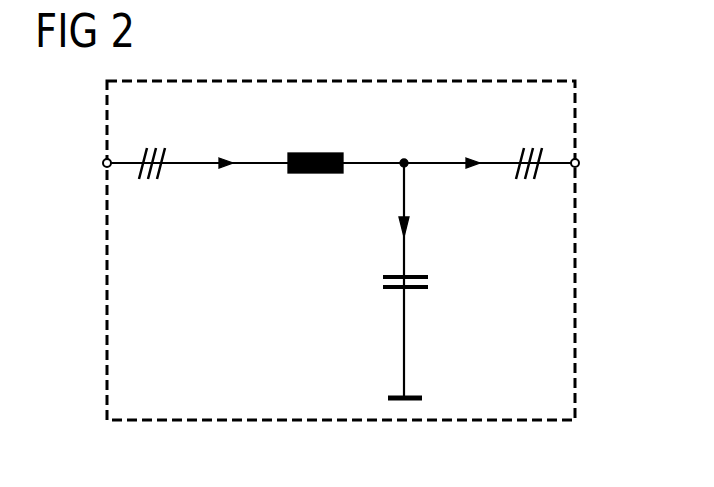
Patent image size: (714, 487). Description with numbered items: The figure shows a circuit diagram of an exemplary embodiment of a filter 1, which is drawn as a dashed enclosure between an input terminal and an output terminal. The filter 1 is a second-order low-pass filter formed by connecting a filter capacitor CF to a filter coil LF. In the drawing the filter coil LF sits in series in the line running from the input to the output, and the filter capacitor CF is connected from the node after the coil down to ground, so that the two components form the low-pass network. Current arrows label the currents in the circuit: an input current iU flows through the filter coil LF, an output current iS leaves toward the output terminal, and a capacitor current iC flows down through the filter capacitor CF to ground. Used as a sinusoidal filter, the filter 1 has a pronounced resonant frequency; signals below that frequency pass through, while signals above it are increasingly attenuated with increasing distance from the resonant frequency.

The filter 1 is at (577, 120).
The filter coil LF is at (312, 173).
The filter capacitor CF is at (423, 288).
The input current iU is at (230, 146).
The output current iS is at (472, 146).
The capacitor current iC is at (416, 228).